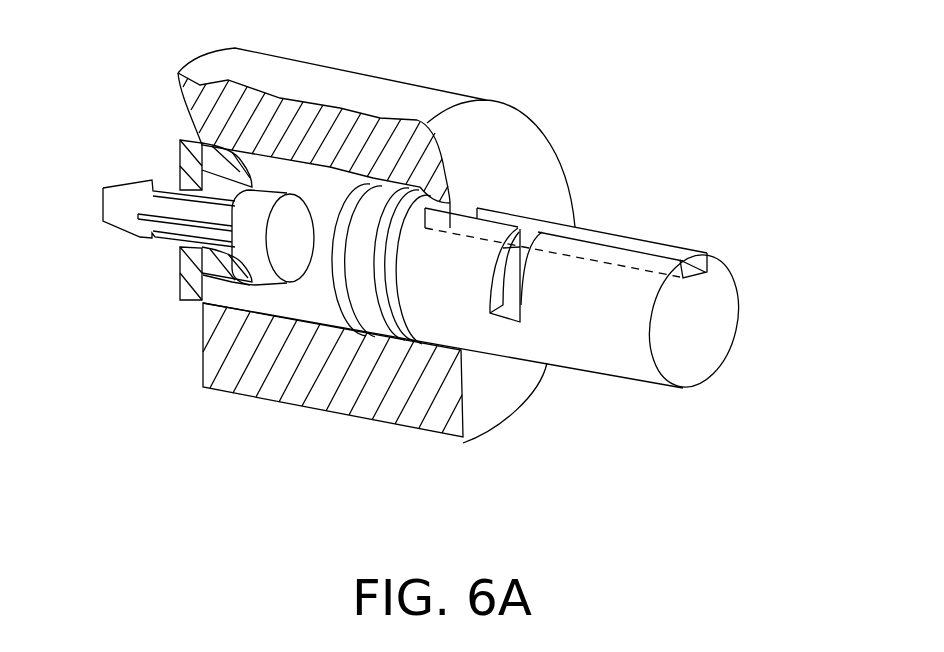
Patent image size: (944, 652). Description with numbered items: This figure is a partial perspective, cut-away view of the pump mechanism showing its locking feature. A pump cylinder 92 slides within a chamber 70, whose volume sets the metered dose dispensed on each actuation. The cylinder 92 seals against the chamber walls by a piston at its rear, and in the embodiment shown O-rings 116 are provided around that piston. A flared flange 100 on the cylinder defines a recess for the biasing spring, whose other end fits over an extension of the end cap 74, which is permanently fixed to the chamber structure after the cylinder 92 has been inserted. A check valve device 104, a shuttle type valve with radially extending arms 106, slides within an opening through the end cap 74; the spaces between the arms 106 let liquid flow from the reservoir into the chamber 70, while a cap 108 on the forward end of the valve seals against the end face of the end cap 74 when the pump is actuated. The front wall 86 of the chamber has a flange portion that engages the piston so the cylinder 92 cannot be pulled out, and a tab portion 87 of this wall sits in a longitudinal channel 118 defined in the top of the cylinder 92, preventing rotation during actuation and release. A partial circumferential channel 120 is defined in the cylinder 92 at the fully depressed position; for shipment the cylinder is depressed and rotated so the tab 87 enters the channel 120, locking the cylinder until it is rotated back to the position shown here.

The chamber 70 is at (326, 200).
The front wall 86 is at (478, 158).
The tab portion 87 is at (468, 208).
The longitudinal channel 118 is at (707, 253).
The cylinder 92 is at (582, 343).
The partial circumferential channel 120 is at (510, 282).
The O-rings 116 is at (410, 330).
The flared flange 100 is at (362, 310).
The cap 108 is at (283, 290).
The end cap 74 is at (179, 277).
The check valve device 104 is at (122, 197).
The radially extending arms 106 is at (165, 237).